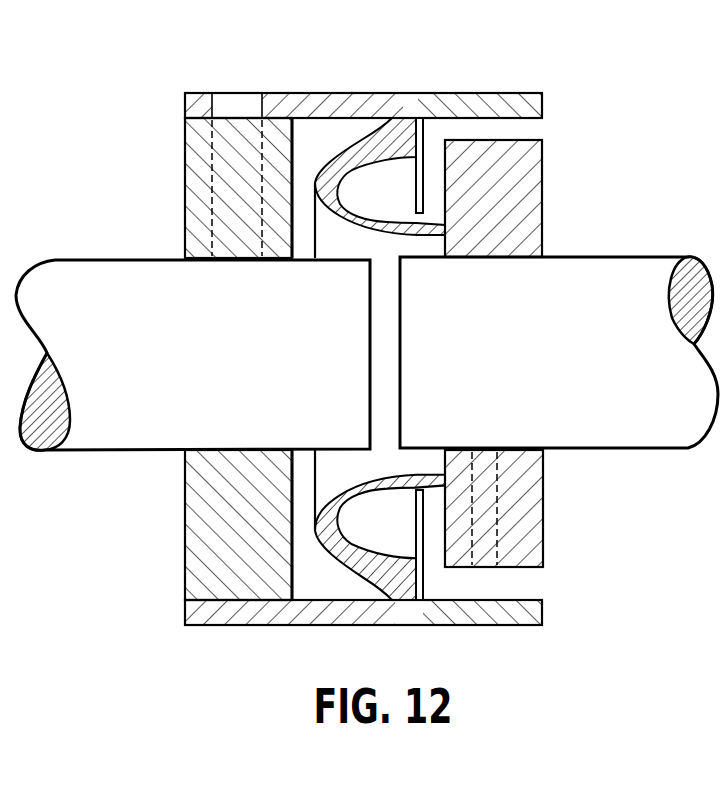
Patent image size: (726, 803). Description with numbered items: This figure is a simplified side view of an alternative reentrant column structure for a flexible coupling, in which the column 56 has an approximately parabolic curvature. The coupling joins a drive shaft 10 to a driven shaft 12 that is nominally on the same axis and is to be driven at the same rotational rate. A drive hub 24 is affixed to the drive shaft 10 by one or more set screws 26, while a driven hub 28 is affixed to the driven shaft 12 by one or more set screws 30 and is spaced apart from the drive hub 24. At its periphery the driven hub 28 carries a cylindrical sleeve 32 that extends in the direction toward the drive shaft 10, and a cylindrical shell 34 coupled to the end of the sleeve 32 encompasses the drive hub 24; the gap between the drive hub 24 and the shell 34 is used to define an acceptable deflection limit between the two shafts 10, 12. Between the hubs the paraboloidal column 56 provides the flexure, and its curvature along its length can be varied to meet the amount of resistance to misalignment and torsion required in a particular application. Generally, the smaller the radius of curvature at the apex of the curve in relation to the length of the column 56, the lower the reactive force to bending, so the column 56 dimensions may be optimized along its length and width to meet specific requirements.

The drive shaft 10 is at (665, 262).
The driven shaft 12 is at (85, 437).
The drive hub 24 is at (543, 492).
The set screw 26 is at (500, 567).
The driven hub 28 is at (213, 573).
The set screw 30 is at (240, 110).
The cylindrical sleeve 32 is at (338, 92).
The cylindrical shell 34 is at (497, 625).
The column 56 is at (362, 137).